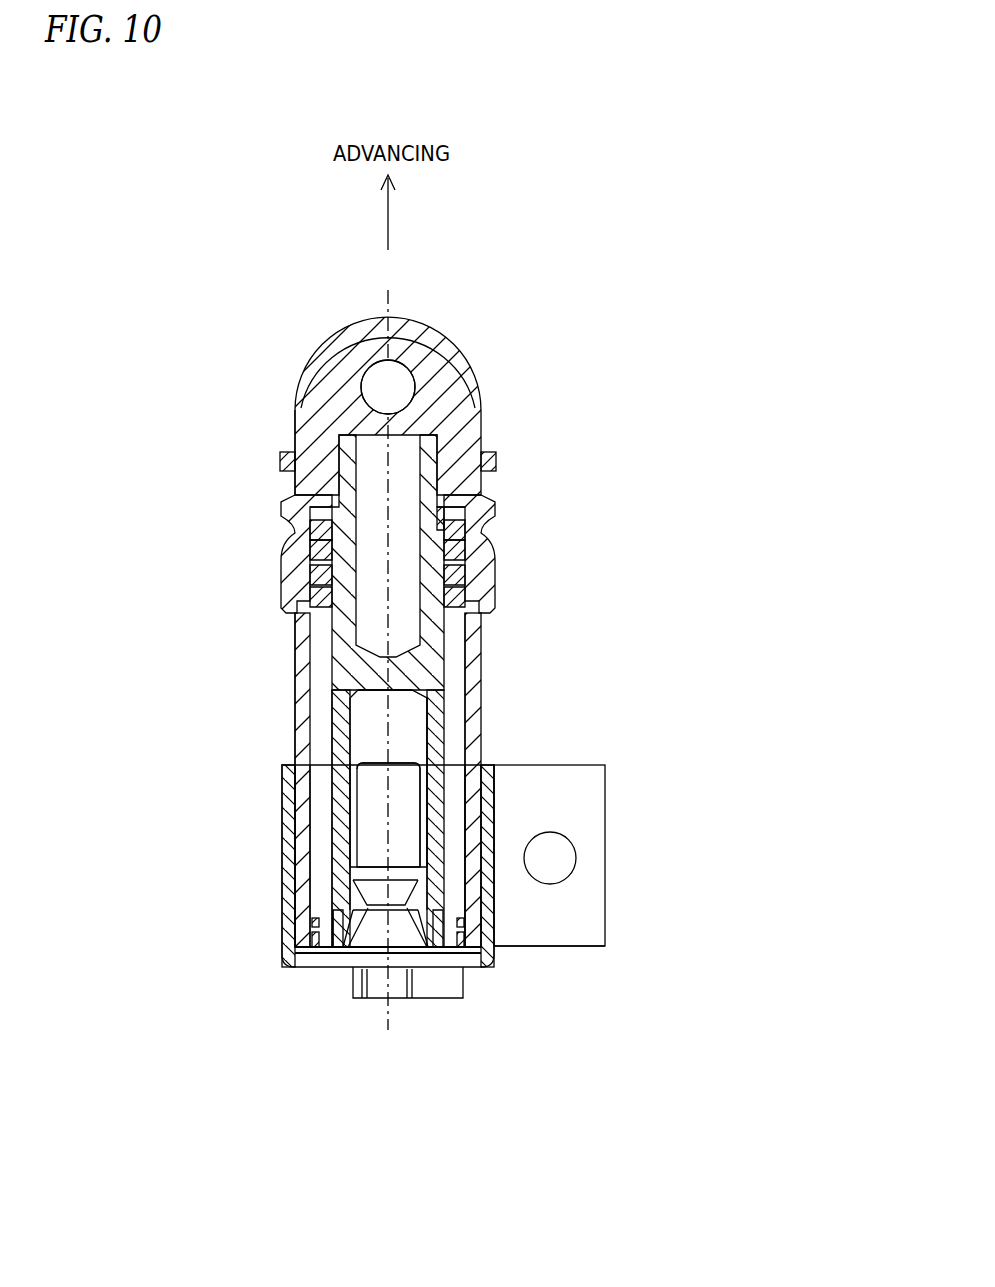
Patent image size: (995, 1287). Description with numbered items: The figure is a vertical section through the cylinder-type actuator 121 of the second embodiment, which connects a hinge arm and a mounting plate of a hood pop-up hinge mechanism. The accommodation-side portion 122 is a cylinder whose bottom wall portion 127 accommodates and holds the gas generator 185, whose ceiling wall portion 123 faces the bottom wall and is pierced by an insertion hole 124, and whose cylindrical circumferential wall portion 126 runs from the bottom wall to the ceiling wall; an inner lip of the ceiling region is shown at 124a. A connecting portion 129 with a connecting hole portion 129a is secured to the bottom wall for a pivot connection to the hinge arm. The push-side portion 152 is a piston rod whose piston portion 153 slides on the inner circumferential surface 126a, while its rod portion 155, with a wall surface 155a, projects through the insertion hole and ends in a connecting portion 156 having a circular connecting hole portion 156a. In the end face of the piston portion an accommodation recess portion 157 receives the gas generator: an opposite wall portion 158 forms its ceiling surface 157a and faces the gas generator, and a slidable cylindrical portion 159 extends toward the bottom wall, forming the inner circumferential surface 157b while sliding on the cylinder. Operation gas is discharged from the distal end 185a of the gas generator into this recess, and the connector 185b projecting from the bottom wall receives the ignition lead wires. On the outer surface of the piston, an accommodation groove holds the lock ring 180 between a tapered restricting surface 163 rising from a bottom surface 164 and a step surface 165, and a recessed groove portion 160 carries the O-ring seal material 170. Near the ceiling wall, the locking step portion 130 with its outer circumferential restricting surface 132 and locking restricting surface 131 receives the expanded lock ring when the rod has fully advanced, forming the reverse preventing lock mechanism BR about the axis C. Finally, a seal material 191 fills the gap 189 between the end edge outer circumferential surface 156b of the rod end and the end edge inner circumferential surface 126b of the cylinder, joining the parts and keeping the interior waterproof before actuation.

The actuator 121 is at (192, 256).
The accommodation-side portion 122 is at (272, 678).
The ceiling wall portion 123 is at (485, 521).
The insertion hole 124 is at (485, 538).
The seal lip 124a is at (485, 565).
The circumferential wall portion 126 is at (304, 622).
The inner circumferential surface 126a is at (484, 650).
The end edge inner circumferential surface 126b is at (304, 485).
The bottom wall portion 127 is at (317, 962).
The connecting portion 129 is at (584, 778).
The connecting hole portion 129a is at (564, 862).
The locking step portion 130 is at (665, 572).
The locking restricting surface 131 is at (488, 622).
The outer circumferential restricting surface 132 is at (488, 592).
The push-side portion 152 is at (475, 315).
The piston portion 153 is at (500, 845).
The rod portion 155 is at (456, 732).
The cylinder inner wall 155a is at (345, 748).
The connecting portion 156 is at (376, 336).
The connecting hole portion 156a is at (378, 382).
The end edge outer circumferential surface 156b is at (302, 428).
The accommodation recess portion 157 is at (370, 722).
The ceiling surface 157a is at (332, 702).
The inner circumferential surface 157b is at (345, 782).
The opposite wall portion 158 is at (468, 699).
The slidable cylindrical portion 159 is at (438, 778).
The recessed groove portion 160 is at (290, 948).
The tapered restricting surface 163 is at (310, 904).
The bottom surface 164 is at (313, 875).
The step surface 165 is at (310, 908).
The seal material 170 is at (470, 871).
The lock ring 180 is at (310, 917).
The gas generator 185 is at (406, 857).
The distal end 185a is at (396, 763).
The connector 185b is at (377, 987).
The gap 189 is at (489, 449).
The seal material 191 is at (491, 505).
The axis C is at (390, 306).
The reverse preventing lock mechanism BR is at (115, 842).